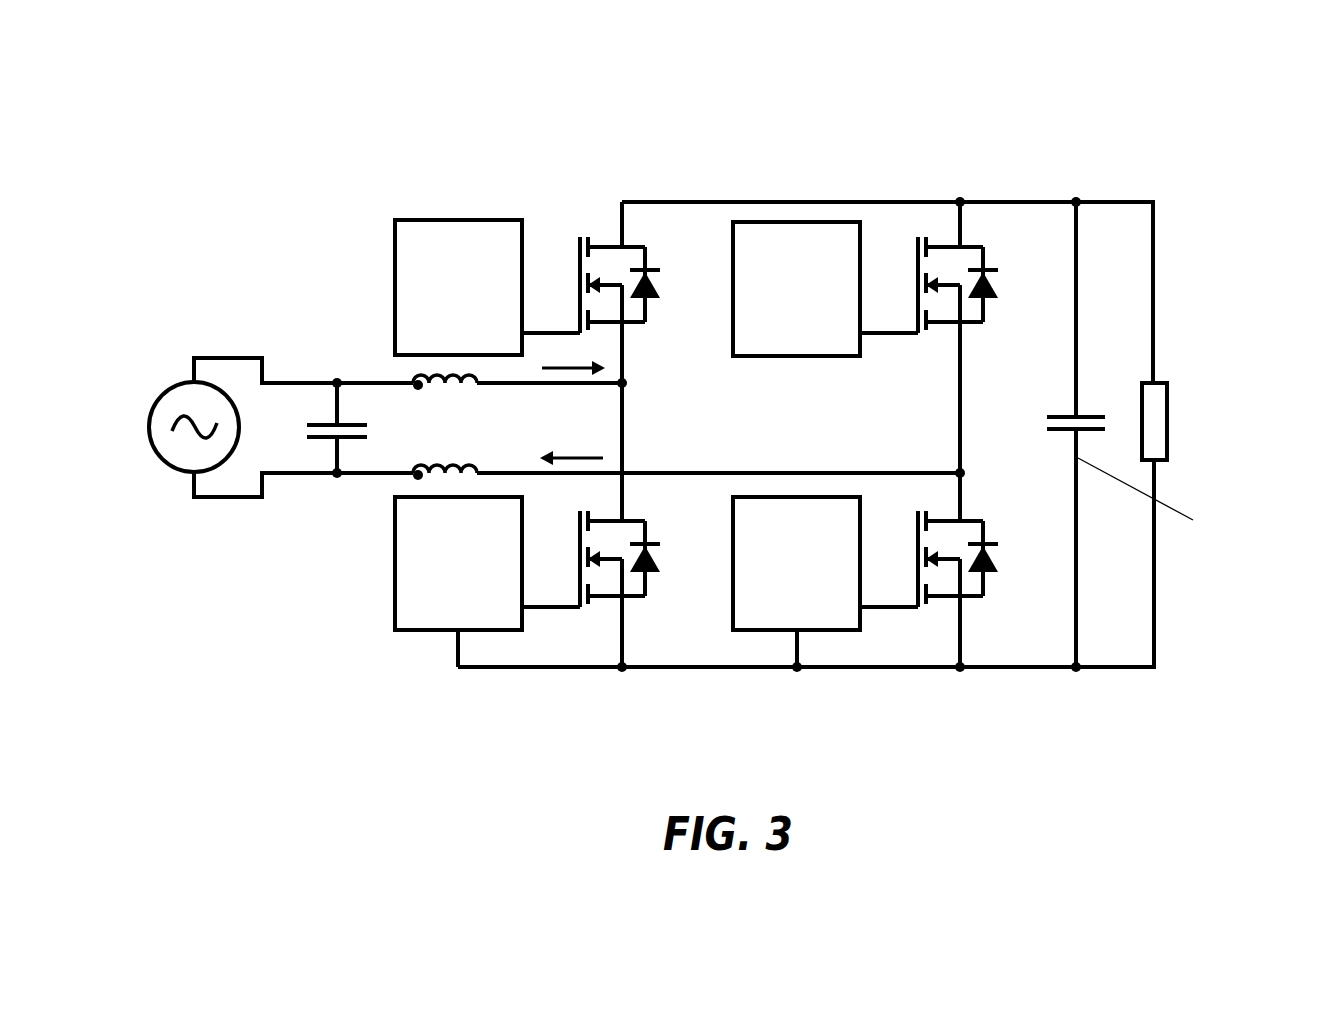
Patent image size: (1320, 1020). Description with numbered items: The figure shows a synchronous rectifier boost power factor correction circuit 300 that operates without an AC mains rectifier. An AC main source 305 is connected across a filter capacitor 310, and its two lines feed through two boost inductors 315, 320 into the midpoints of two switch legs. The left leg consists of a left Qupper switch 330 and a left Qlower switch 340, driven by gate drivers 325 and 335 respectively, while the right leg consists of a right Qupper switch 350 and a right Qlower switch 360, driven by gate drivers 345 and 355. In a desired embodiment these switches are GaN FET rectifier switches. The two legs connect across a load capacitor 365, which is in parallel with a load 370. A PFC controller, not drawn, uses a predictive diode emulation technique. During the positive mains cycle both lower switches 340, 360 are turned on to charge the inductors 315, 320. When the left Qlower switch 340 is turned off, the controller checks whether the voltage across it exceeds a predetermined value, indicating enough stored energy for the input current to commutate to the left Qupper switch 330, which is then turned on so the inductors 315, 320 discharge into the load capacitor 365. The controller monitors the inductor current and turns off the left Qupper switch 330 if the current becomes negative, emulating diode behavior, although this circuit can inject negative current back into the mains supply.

The synchronous rectifier boost power factor correction circuit 300 is at (1160, 123).
The AC main source 305 is at (152, 409).
The filter capacitor 310 is at (318, 422).
The boost inductor 315 is at (415, 381).
The boost inductor 320 is at (416, 479).
The gate driver 325 is at (487, 287).
The left Qupper switch 330 is at (605, 243).
The gate driver 335 is at (487, 582).
The left Qlower switch 340 is at (645, 519).
The gate driver 345 is at (825, 289).
The right Qupper switch 350 is at (980, 248).
The gate driver 355 is at (825, 582).
The right Qlower switch 360 is at (983, 519).
The load capacitor 365 is at (1094, 417).
The load 370 is at (1169, 385).